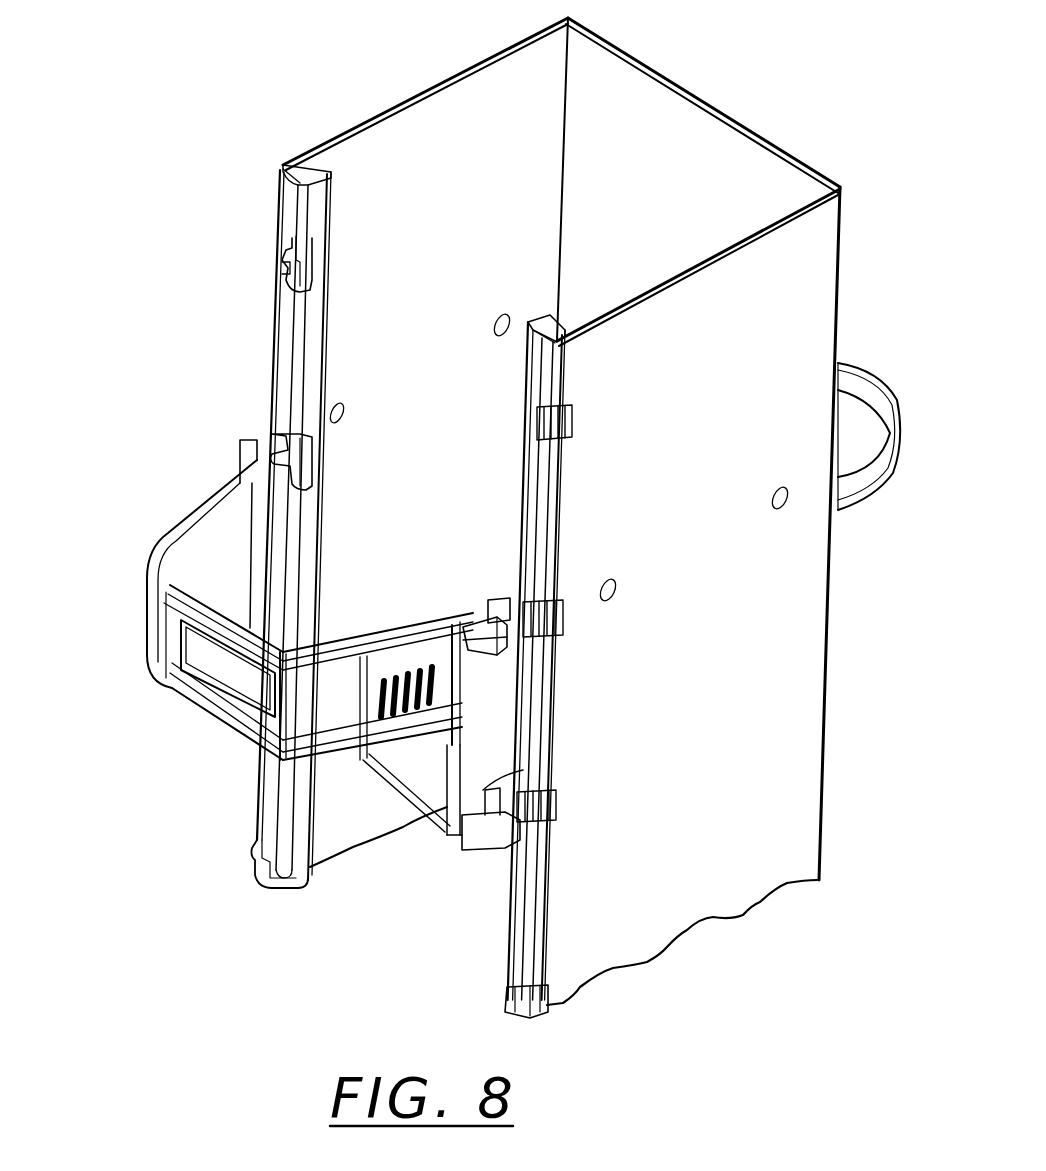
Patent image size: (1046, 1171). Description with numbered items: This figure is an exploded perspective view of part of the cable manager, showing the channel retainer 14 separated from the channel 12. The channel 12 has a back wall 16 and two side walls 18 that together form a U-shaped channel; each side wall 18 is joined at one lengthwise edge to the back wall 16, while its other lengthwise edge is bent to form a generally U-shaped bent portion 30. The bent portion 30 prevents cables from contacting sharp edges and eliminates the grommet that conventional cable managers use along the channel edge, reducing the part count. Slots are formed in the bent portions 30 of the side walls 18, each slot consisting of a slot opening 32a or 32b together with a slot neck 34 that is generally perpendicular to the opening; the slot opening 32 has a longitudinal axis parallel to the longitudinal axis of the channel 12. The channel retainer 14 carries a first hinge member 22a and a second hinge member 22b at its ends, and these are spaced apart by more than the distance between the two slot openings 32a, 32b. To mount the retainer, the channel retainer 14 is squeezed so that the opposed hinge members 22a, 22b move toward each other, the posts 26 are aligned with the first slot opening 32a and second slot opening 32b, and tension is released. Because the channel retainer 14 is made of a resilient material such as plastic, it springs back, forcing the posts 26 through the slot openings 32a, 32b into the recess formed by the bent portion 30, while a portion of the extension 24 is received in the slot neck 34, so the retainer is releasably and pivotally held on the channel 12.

The channel 12 is at (509, 518).
The channel retainer 14 is at (157, 617).
The back wall 16 is at (650, 87).
The side wall 18 is at (803, 260).
The first hinge member 22a is at (239, 449).
The second hinge member 22b is at (479, 598).
The extension 24 is at (473, 637).
The post 26 is at (507, 600).
The bent portion 30 is at (283, 165).
The slot opening 32 is at (288, 280).
The first slot opening 32a is at (305, 458).
The second slot opening 32b is at (540, 598).
The slot neck 34 is at (290, 247).